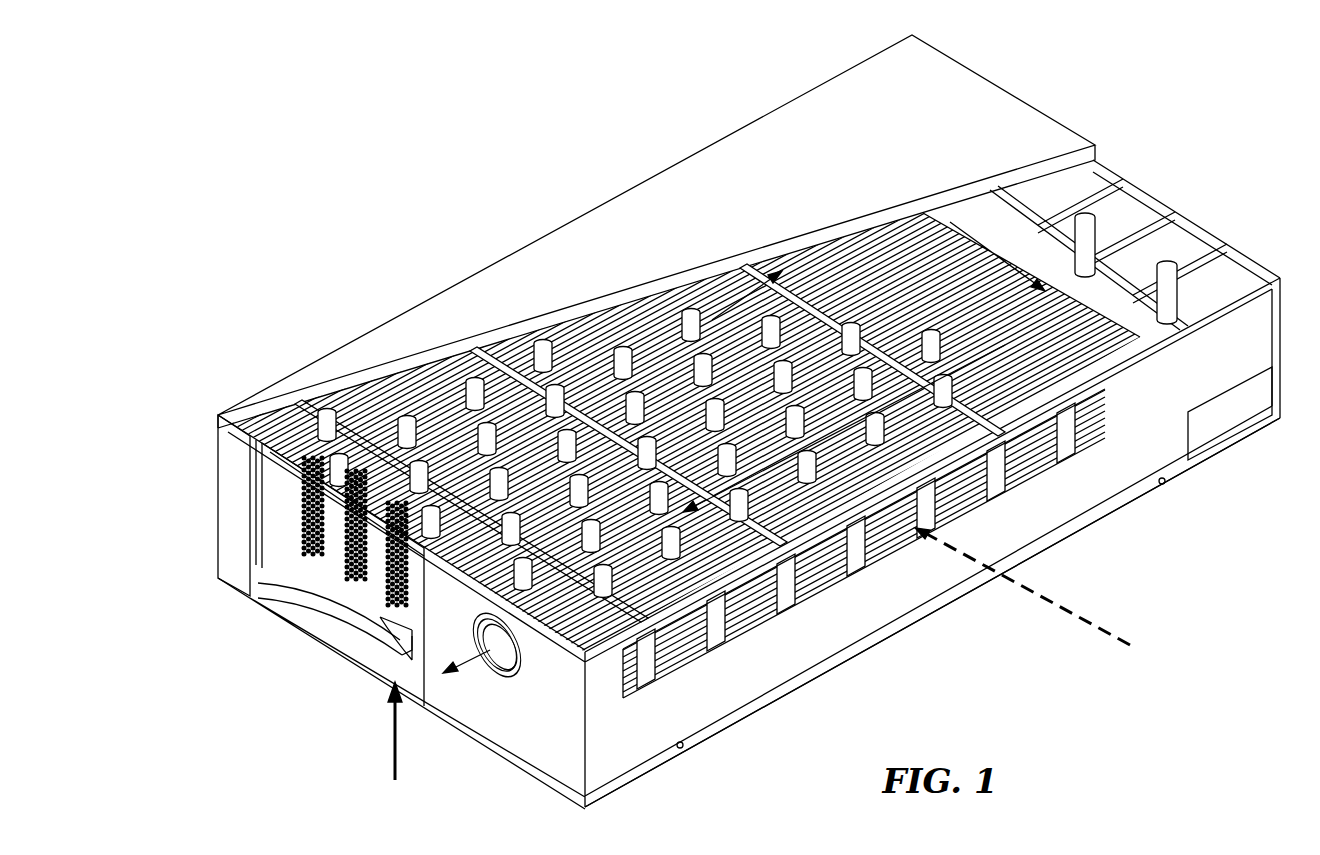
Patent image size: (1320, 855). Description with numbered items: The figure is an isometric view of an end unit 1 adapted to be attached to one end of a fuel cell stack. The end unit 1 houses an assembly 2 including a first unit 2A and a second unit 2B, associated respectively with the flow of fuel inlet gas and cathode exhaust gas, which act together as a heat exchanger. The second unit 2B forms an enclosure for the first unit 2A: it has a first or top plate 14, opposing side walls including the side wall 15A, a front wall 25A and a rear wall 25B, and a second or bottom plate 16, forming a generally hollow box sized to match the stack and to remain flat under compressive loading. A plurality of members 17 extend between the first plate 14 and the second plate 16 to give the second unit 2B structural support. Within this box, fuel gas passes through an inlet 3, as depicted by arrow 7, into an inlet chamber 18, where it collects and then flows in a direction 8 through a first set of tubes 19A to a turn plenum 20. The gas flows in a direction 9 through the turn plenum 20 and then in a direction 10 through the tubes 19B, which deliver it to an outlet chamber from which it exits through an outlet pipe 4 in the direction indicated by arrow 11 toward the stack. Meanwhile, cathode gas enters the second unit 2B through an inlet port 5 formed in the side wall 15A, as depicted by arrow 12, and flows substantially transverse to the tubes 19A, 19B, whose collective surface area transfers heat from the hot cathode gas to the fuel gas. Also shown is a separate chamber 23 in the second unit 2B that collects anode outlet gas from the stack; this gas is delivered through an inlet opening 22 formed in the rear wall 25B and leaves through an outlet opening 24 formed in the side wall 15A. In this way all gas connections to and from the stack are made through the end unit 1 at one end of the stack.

The end unit 1 is at (1022, 92).
The first plate 14 is at (820, 110).
The first unit 2A is at (428, 385).
The second unit 2B is at (578, 240).
The direction 8 is at (730, 300).
The direction 9 is at (968, 240).
The direction 10 is at (890, 410).
The assembly 2 is at (1150, 325).
The rear wall 25B is at (1103, 180).
The inlet opening 22 is at (1140, 222).
The turn plenum 20 is at (1085, 300).
The separate chamber 23 is at (1210, 268).
The tubes 19B is at (690, 642).
The inlet port 5 is at (780, 610).
The side wall 15A is at (1103, 470).
The second plate 16 is at (1068, 535).
The outlet opening 24 is at (1213, 432).
The arrow 12 is at (1058, 615).
The outlet pipe 4 is at (510, 655).
The arrow 11 is at (480, 690).
The first set of tubes 19A is at (367, 410).
The members 17 is at (398, 386).
The inlet chamber 18 is at (345, 585).
The inlet 3 is at (395, 655).
The arrow 7 is at (385, 745).
The front wall 25A is at (232, 560).